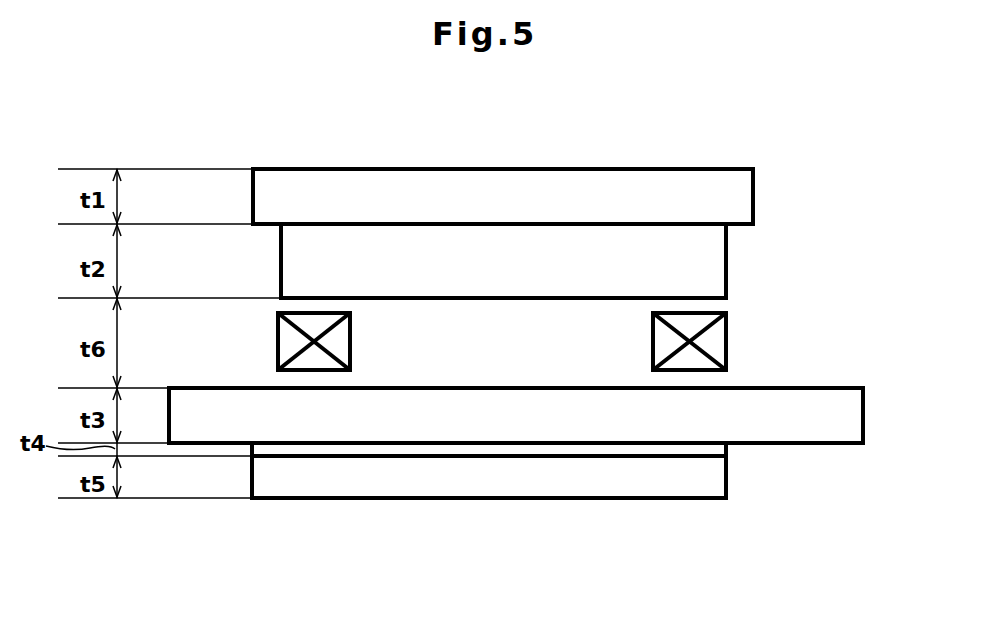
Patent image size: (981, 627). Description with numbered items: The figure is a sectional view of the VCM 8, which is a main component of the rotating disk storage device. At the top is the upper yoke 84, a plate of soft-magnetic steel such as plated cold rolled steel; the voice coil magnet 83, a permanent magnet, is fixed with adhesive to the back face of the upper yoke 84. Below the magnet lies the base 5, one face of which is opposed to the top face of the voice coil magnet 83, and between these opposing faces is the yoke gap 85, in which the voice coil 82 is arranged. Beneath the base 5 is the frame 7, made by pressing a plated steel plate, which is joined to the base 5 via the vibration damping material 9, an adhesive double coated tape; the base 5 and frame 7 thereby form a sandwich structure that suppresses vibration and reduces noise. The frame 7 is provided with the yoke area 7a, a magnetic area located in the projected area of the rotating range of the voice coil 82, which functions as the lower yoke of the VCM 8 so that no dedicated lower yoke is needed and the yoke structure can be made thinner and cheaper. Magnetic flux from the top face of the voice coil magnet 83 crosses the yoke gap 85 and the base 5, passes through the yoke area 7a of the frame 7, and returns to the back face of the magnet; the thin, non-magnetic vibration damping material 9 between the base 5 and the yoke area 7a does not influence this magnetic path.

The VCM 8 is at (228, 140).
The upper yoke 84 is at (723, 200).
The voice coil magnet 83 is at (703, 266).
The yoke gap 85 is at (752, 340).
The voice coil 82 is at (316, 360).
The base 5 is at (835, 419).
The frame 7 is at (733, 475).
The vibration damping material 9 is at (497, 448).
The yoke area 7a is at (655, 478).